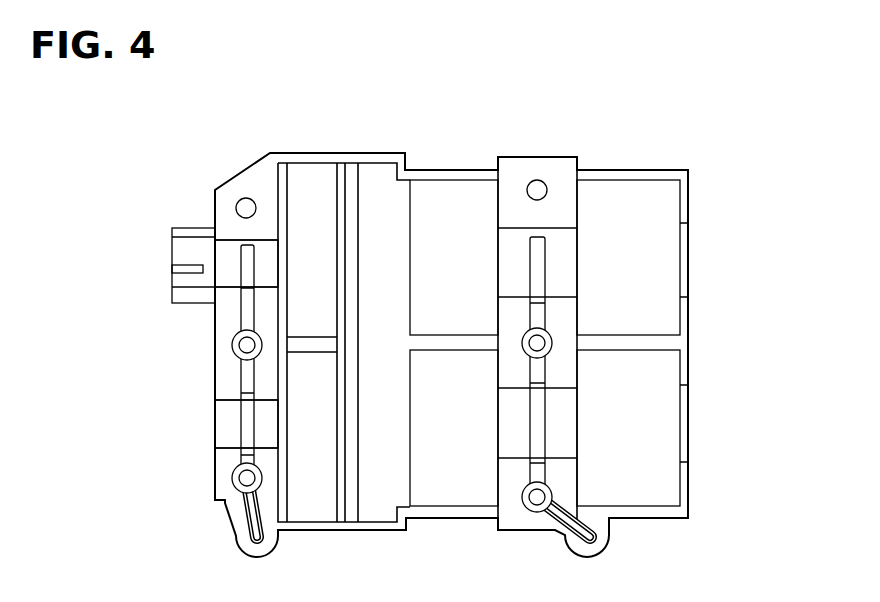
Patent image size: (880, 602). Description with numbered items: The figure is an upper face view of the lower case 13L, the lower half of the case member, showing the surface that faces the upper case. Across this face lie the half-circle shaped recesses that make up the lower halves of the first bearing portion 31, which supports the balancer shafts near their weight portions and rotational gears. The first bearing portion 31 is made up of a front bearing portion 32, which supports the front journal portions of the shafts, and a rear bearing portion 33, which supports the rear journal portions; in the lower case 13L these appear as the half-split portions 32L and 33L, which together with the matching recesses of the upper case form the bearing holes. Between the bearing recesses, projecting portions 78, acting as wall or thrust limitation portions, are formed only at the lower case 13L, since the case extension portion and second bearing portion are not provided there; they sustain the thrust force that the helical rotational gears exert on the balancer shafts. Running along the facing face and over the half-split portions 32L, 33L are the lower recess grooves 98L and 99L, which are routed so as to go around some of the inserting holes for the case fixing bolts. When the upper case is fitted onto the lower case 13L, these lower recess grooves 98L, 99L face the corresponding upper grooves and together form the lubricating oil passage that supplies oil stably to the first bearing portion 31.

The lower case 13L is at (698, 160).
The projecting portion 78 is at (350, 192).
The first bearing portion 31 is at (256, 343).
The front bearing portion 32 is at (215, 276).
The half-split portion of the front bearing portion 32L is at (228, 257).
The rear bearing portion 33 is at (497, 263).
The half-split portion of the rear bearing portion 33L is at (570, 263).
The lower recess groove 99L is at (232, 373).
The lower recess groove 98L is at (548, 327).